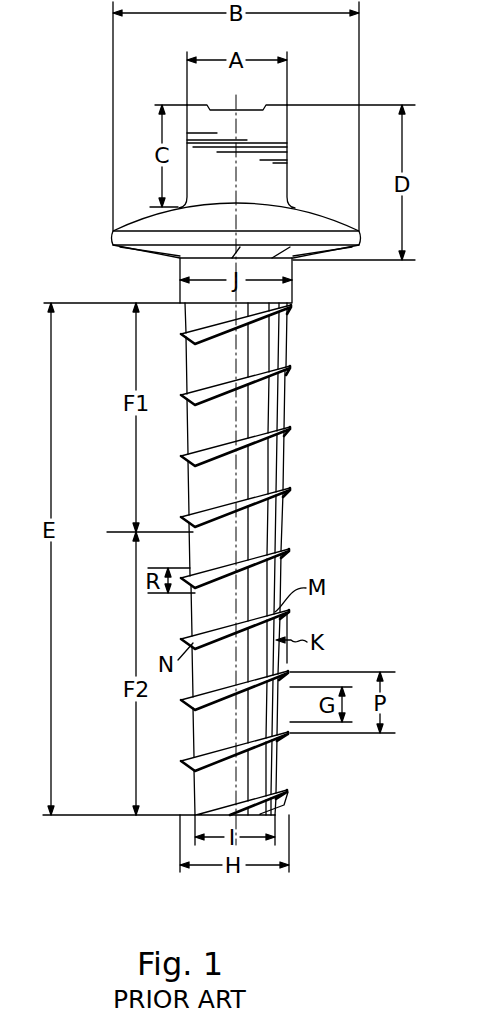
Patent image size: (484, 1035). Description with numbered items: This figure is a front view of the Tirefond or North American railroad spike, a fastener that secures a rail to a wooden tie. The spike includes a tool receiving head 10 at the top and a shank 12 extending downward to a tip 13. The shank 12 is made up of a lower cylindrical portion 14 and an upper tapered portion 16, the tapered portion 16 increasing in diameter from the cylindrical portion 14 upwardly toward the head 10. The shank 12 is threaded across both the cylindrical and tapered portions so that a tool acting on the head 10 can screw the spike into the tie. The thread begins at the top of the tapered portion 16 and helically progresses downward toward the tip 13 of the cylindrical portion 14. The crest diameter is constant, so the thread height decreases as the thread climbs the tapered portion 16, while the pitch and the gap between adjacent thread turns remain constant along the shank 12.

The tool receiving head 10 is at (289, 153).
The shank 12 is at (278, 573).
The tip 13 is at (277, 815).
The cylindrical portion 14 is at (278, 523).
The tapered portion 16 is at (286, 398).